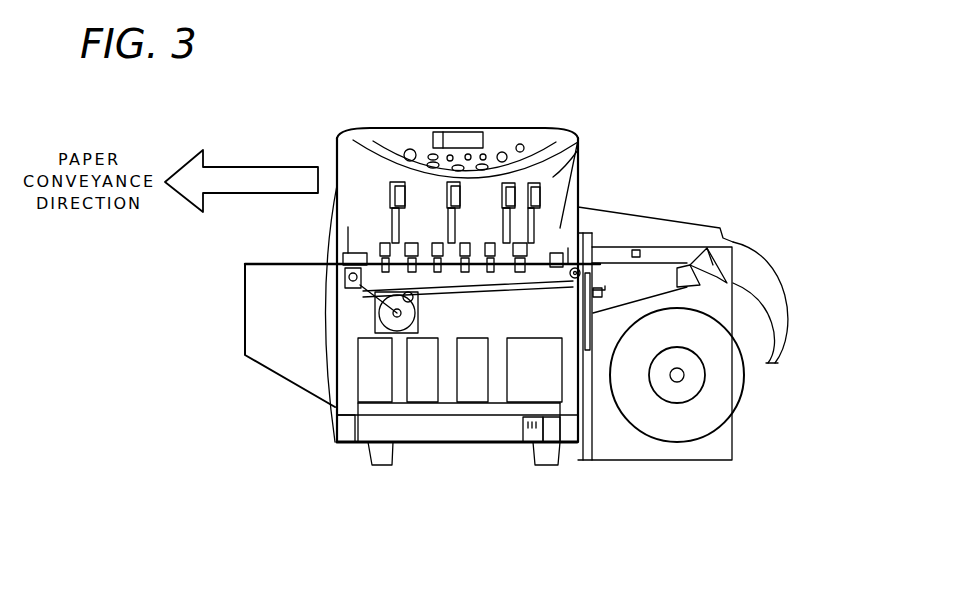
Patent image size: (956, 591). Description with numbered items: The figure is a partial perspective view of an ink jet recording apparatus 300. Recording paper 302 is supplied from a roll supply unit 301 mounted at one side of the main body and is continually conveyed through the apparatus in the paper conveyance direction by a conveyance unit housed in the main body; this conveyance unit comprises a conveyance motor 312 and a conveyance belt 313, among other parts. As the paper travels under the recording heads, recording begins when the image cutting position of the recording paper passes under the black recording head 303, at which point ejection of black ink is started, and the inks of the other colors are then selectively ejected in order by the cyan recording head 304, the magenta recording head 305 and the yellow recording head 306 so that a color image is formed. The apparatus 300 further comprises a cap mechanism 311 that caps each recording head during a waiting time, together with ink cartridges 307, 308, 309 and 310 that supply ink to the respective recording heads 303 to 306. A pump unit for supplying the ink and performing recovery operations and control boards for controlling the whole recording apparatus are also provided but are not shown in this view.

The recording apparatus 300 is at (335, 157).
The roll supply unit 301 is at (680, 388).
The recording paper 302 is at (735, 382).
The black recording head 303 is at (580, 151).
The cyan recording head 304 is at (503, 182).
The magenta recording head 305 is at (450, 147).
The yellow recording head 306 is at (390, 182).
The ink cartridge 307 is at (538, 392).
The ink cartridge 308 is at (473, 392).
The ink cartridge 309 is at (420, 392).
The ink cartridge 310 is at (378, 390).
The cap mechanism 311 is at (560, 246).
The conveyance motor 312 is at (372, 300).
The conveyance belt 313 is at (360, 293).